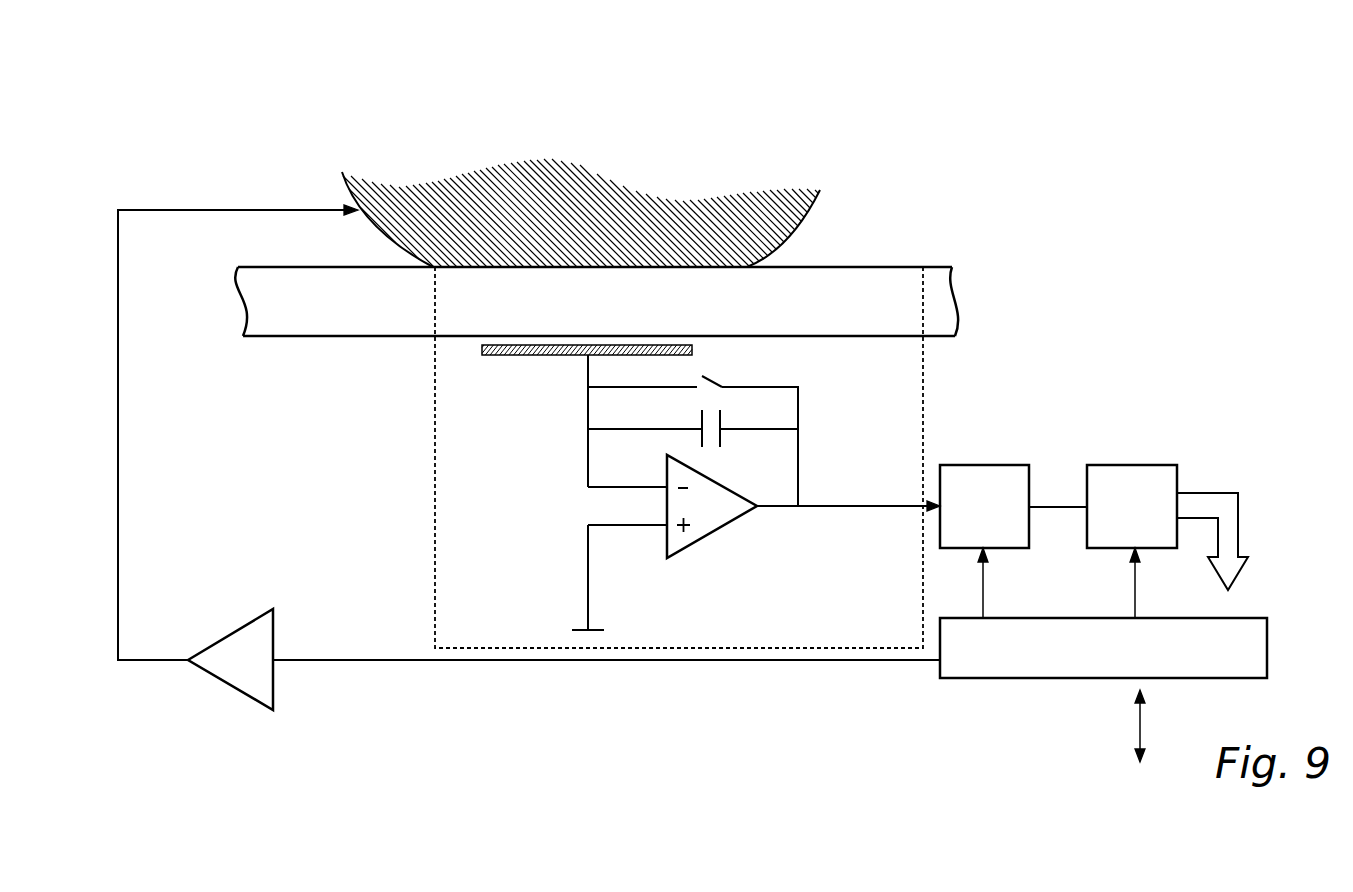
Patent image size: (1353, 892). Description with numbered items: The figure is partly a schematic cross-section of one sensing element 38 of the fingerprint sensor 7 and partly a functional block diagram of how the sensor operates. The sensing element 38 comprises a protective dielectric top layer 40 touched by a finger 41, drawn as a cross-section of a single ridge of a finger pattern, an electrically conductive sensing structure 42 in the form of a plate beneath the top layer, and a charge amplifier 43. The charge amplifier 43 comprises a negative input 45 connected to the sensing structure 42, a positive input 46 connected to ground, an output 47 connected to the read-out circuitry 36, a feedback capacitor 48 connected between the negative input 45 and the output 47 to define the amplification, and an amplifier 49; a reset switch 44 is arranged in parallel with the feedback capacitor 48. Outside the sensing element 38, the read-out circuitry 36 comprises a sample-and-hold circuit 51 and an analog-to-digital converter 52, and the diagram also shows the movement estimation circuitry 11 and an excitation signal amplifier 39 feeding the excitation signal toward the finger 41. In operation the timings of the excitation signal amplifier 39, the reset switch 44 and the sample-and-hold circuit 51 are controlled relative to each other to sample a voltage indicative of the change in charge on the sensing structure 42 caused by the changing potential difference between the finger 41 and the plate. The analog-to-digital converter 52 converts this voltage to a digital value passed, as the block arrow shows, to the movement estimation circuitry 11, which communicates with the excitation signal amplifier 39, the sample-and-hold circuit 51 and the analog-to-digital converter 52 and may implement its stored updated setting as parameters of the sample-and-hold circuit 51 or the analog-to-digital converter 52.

The fingerprint sensor 7 is at (262, 180).
The finger 41 is at (387, 198).
The protective dielectric top layer 40 is at (263, 300).
The sensing element 38 is at (434, 535).
The sensing structure 42 is at (518, 356).
The reset switch 44 is at (703, 376).
The feedback capacitor 48 is at (720, 437).
The amplifier 49 is at (672, 558).
The negative input 45 is at (665, 486).
The positive input 46 is at (663, 527).
The output 47 is at (755, 513).
The charge amplifier 43 is at (533, 524).
The excitation signal amplifier 39 is at (240, 648).
The sample-and-hold circuit 51 is at (983, 465).
The analog-to-digital converter 52 is at (1130, 465).
The read-out circuitry 36 is at (1108, 322).
The movement estimation circuitry 11 is at (1023, 678).